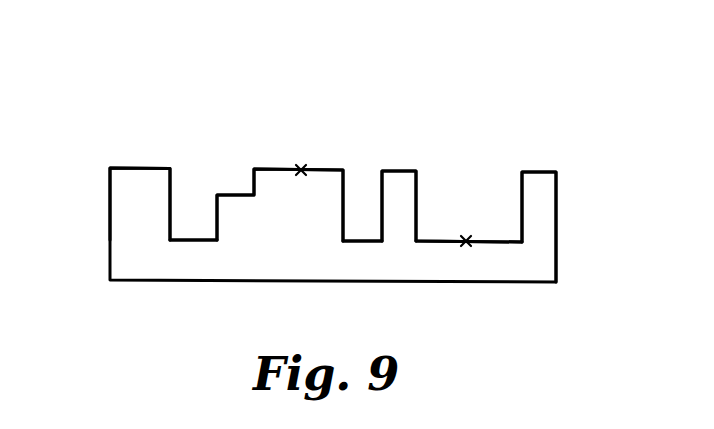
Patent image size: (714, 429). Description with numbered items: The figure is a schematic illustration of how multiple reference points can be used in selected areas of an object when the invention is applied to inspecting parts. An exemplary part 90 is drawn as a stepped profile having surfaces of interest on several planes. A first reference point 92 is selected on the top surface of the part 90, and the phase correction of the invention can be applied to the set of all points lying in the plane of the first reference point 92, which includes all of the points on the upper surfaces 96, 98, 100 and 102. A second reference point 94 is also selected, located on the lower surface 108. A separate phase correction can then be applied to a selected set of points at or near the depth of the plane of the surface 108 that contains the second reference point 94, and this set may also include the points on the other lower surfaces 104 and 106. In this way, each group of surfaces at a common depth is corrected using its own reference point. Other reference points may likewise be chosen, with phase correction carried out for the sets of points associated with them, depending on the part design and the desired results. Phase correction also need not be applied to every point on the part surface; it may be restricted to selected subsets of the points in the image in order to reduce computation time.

The part 90 is at (425, 64).
The first reference point 92 is at (304, 156).
The second reference point 94 is at (467, 220).
The surface 96 is at (138, 168).
The surface 98 is at (280, 168).
The surface 100 is at (393, 168).
The surface 102 is at (538, 171).
The surface 104 is at (194, 242).
The surface 106 is at (360, 242).
The surface 108 is at (491, 243).